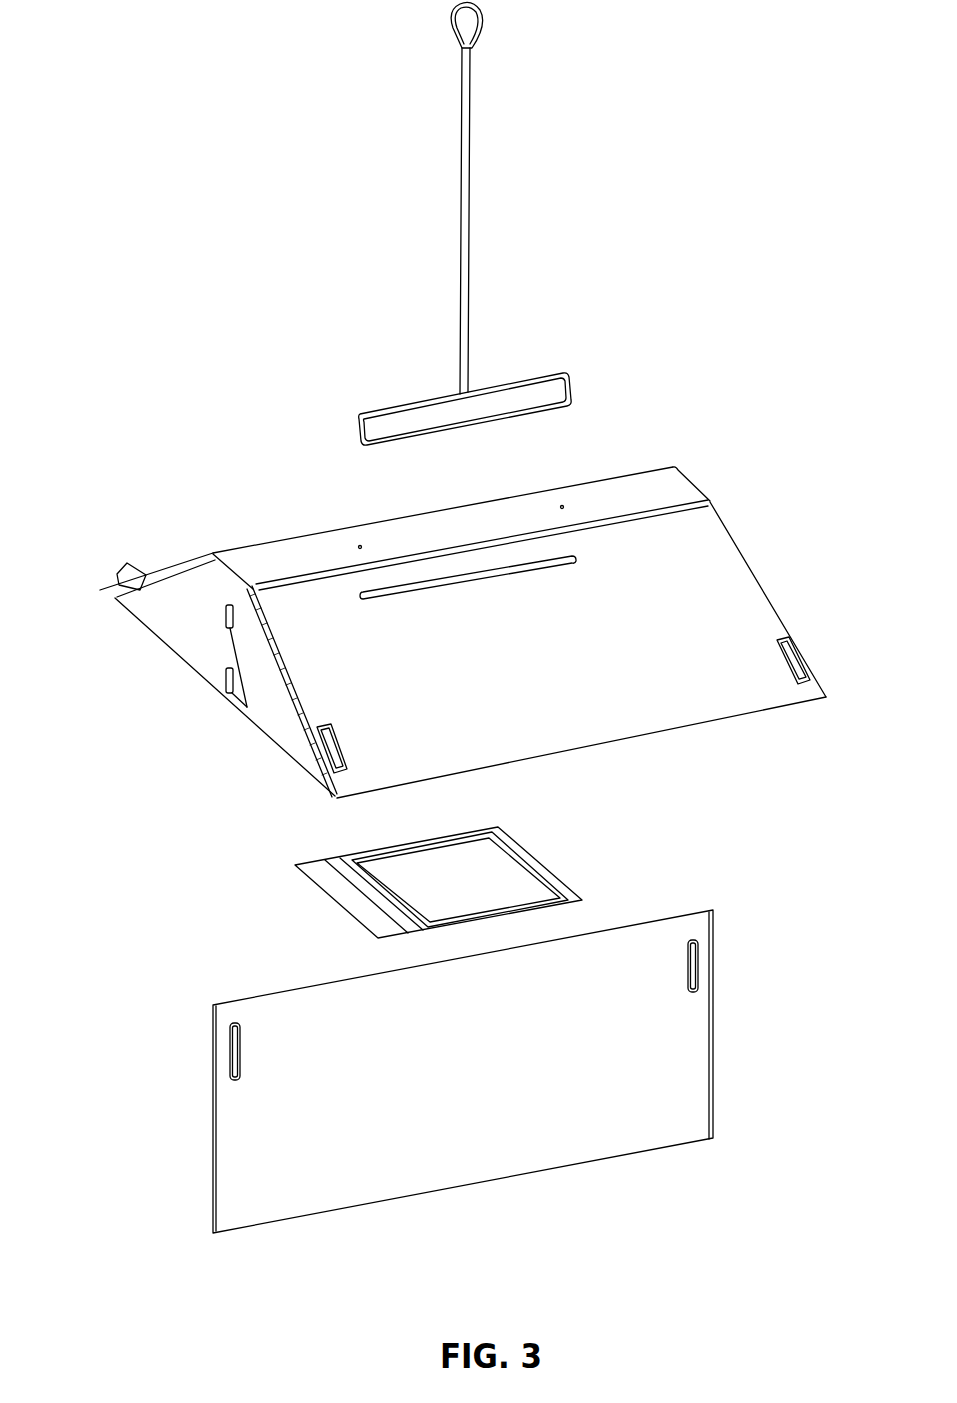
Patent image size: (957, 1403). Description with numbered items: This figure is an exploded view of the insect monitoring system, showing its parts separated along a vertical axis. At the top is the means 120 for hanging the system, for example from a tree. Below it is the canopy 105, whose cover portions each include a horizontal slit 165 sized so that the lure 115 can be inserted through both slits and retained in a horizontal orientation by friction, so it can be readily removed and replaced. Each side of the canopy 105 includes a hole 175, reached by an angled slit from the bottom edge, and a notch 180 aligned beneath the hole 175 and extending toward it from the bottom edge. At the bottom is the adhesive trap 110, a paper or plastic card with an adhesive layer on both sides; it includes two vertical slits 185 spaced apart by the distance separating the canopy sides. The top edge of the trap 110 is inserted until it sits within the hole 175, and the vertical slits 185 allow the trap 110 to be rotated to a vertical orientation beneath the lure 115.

The canopy 105 is at (287, 557).
The adhesive trap 110 is at (268, 1163).
The lure 115 is at (343, 892).
The means for hanging 120 is at (463, 287).
The horizontal slit 165 is at (485, 572).
The hole 175 is at (228, 618).
The notch 180 is at (228, 682).
The vertical slits 185 is at (693, 970).